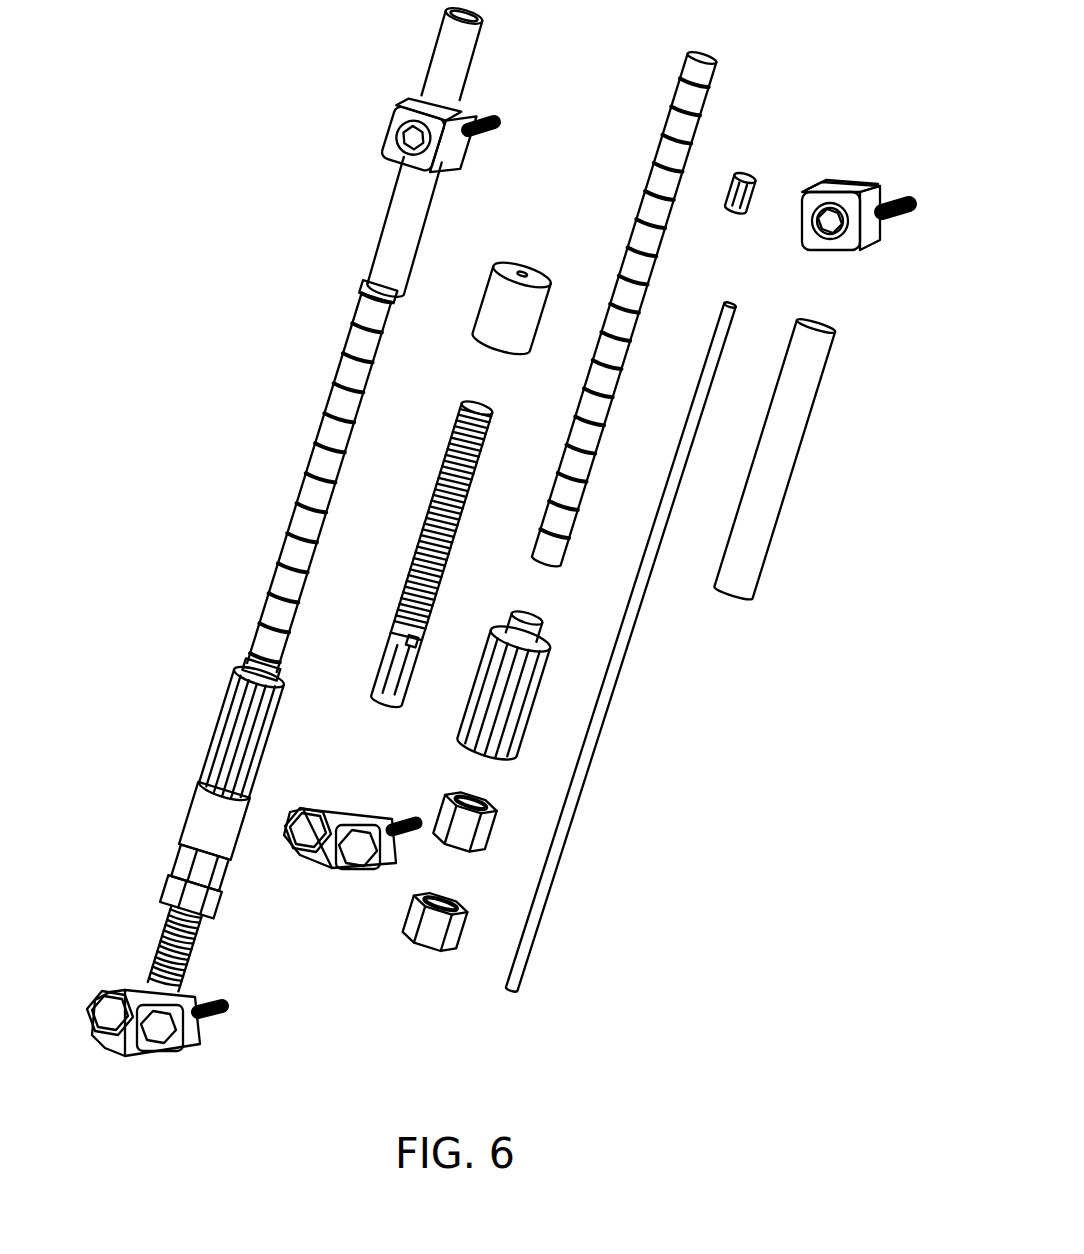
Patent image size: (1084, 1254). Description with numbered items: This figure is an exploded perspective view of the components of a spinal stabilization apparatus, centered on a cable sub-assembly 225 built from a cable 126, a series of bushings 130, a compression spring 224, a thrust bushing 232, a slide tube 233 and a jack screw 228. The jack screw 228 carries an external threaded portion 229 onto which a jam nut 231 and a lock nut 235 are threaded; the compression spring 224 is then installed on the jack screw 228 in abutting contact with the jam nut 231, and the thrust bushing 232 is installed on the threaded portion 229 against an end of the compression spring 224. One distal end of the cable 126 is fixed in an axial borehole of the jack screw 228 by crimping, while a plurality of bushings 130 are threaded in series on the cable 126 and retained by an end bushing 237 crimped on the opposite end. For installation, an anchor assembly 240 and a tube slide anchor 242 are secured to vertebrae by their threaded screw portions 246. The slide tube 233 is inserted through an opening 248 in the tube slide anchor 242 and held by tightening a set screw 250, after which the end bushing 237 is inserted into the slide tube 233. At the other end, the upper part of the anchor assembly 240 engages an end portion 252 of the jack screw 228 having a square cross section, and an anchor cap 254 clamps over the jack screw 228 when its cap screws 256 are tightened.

The cable 126 is at (647, 615).
The bushings 130 is at (343, 398).
The compression spring 224 is at (487, 300).
The cable sub-assembly 225 is at (278, 463).
The jack screw 228 is at (398, 640).
The threaded portion 229 is at (445, 497).
The jam nut 231 is at (186, 863).
The thrust bushing 232 is at (222, 722).
The slide tube 233 is at (455, 72).
The lock nut 235 is at (160, 890).
The end bushing 237 is at (766, 175).
The anchor assembly 240 is at (336, 892).
The tube slide anchor 242 is at (865, 252).
The threaded screw portions 246 is at (492, 132).
The opening 248 is at (846, 188).
The set screw 250 is at (815, 234).
The end portion 252 is at (398, 665).
The anchor cap 254 is at (330, 845).
The cap screws 256 is at (105, 1012).